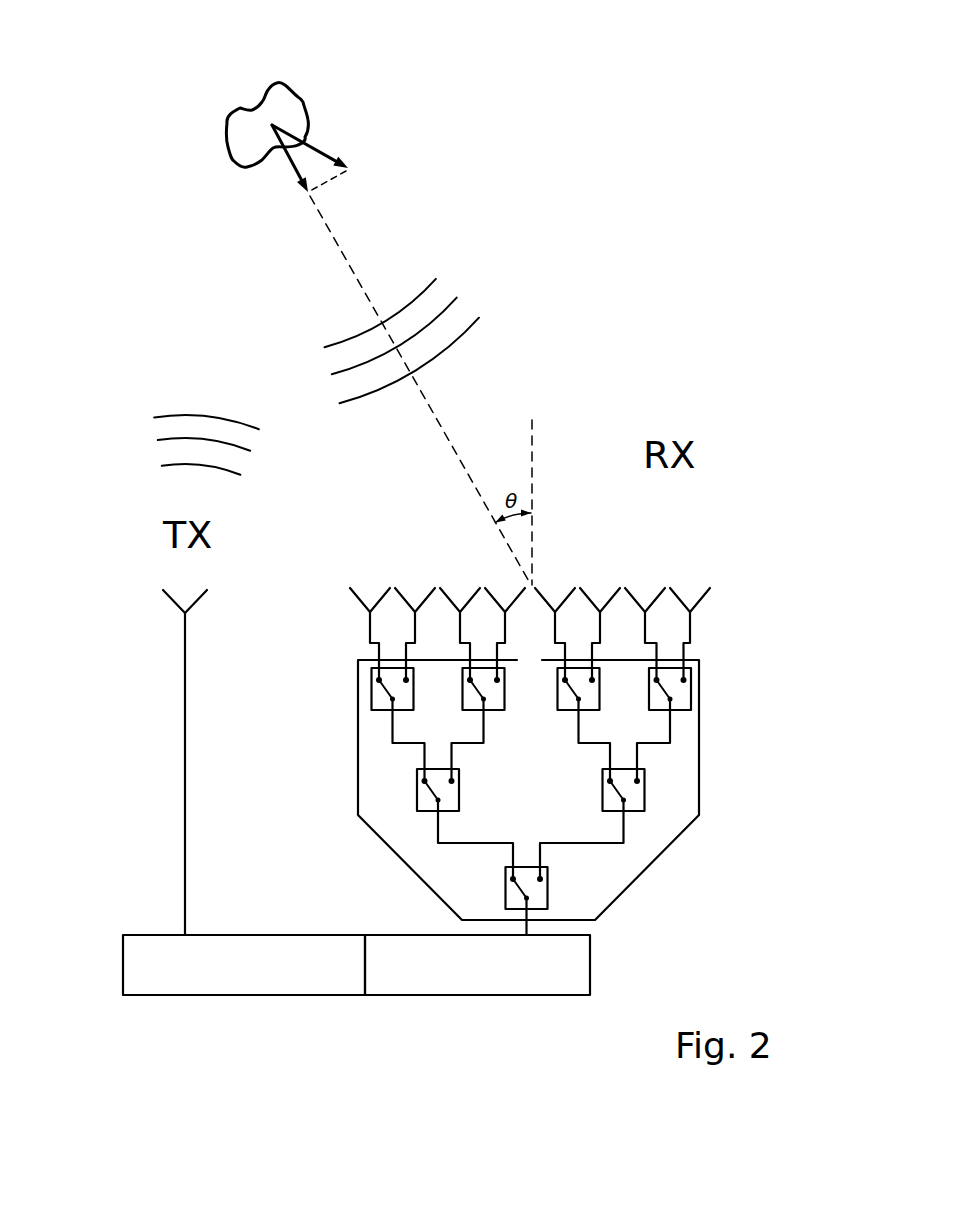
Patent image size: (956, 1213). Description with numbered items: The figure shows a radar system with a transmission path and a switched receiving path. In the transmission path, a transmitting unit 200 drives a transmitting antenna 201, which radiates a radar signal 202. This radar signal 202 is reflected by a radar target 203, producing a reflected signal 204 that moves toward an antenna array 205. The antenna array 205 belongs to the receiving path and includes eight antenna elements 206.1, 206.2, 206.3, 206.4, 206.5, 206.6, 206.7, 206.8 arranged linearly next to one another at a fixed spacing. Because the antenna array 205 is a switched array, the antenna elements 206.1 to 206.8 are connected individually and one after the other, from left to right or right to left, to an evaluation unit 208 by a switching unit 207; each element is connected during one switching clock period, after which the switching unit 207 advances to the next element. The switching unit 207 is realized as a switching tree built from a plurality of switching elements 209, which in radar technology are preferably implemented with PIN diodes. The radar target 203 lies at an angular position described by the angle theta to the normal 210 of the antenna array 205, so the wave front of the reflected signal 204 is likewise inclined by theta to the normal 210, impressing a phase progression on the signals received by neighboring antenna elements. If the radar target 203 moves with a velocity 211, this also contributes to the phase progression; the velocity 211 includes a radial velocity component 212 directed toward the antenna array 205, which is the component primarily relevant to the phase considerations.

The transmitting unit 200 is at (244, 965).
The transmitting antenna 201 is at (185, 803).
The radar signal 202 is at (156, 405).
The radar target 203 is at (250, 127).
The reflected signal 204 is at (443, 258).
The antenna array 205 is at (738, 642).
The antenna element 206.1 is at (351, 588).
The antenna element 206.2 is at (408, 571).
The antenna element 206.3 is at (442, 588).
The antenna element 206.4 is at (500, 571).
The antenna element 206.5 is at (568, 592).
The antenna element 206.6 is at (613, 590).
The antenna element 206.7 is at (656, 592).
The antenna element 206.8 is at (705, 590).
The switching unit 207 is at (699, 782).
The evaluation unit 208 is at (477, 965).
The switching element 209 is at (462, 687).
The normal 210 is at (532, 462).
The velocity 211 is at (311, 142).
The radial velocity component 212 is at (283, 162).